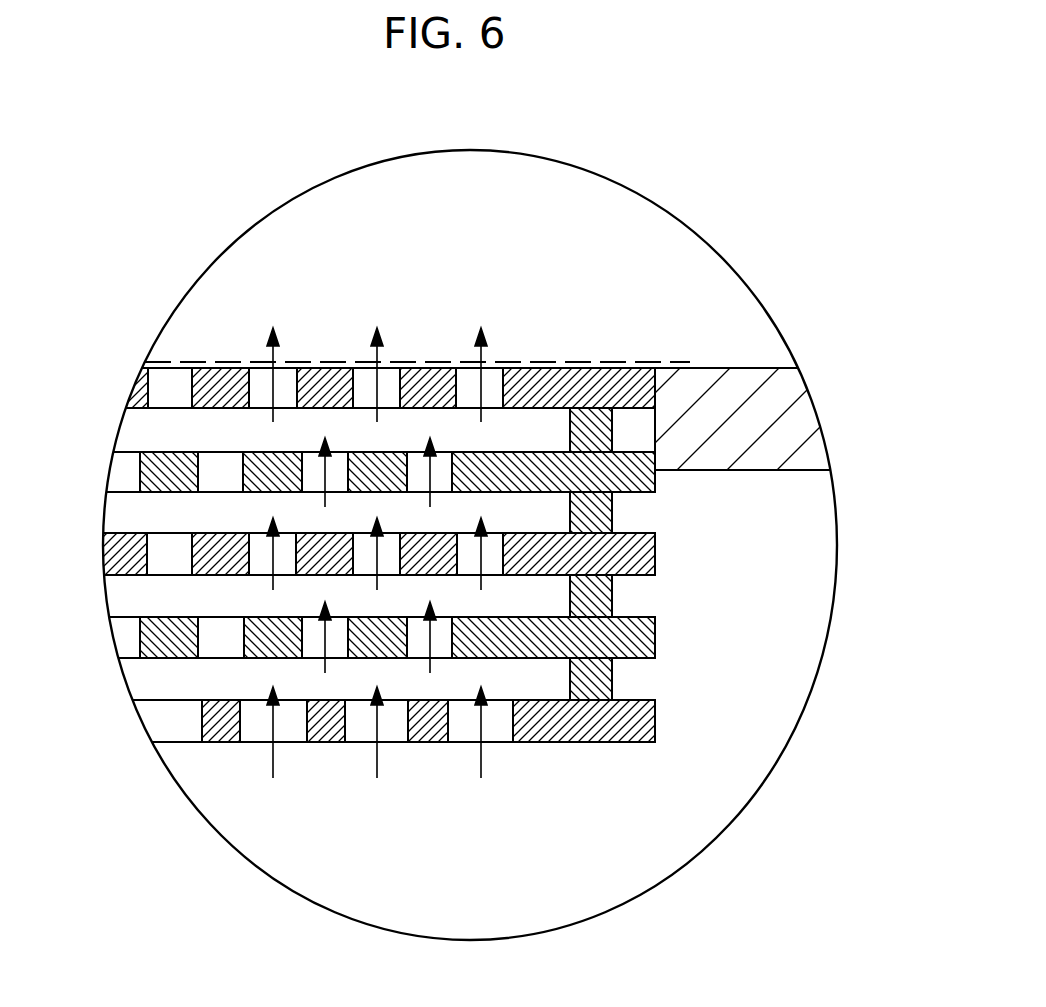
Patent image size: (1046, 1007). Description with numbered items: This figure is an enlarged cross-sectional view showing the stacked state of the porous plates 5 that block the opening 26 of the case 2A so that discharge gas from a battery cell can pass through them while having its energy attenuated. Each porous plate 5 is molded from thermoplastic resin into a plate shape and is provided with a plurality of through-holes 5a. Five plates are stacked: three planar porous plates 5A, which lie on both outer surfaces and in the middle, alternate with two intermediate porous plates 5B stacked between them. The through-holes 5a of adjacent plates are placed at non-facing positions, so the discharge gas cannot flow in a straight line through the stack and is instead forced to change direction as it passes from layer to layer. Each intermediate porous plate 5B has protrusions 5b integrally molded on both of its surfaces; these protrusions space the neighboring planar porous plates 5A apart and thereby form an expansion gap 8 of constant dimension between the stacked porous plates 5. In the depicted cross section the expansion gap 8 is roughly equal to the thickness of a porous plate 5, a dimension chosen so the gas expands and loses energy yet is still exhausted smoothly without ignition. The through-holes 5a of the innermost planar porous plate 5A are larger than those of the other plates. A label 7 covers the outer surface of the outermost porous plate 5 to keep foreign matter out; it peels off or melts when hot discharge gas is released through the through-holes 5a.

The porous plate 5 is at (441, 573).
The planar porous plate 5A is at (580, 395).
The intermediate porous plate 5B is at (523, 472).
The through-hole 5a is at (232, 438).
The protrusion 5b is at (595, 428).
The label 7 is at (325, 362).
The expansion gap 8 is at (133, 440).
The opening 26 is at (635, 352).
The housing wall 2A is at (743, 423).